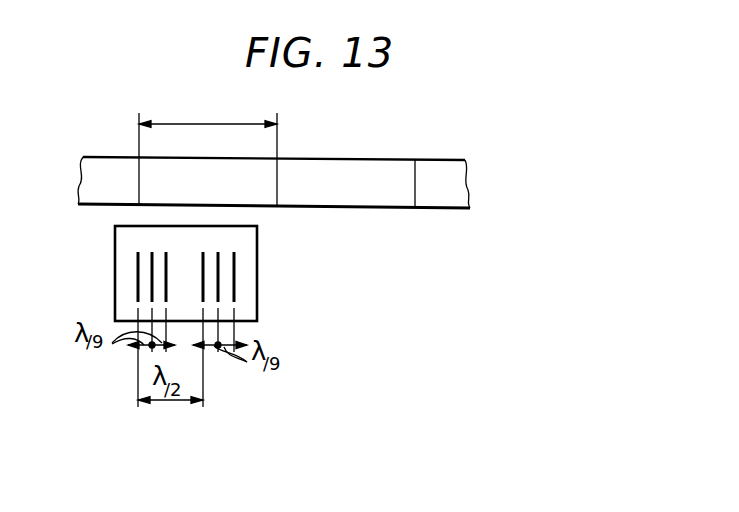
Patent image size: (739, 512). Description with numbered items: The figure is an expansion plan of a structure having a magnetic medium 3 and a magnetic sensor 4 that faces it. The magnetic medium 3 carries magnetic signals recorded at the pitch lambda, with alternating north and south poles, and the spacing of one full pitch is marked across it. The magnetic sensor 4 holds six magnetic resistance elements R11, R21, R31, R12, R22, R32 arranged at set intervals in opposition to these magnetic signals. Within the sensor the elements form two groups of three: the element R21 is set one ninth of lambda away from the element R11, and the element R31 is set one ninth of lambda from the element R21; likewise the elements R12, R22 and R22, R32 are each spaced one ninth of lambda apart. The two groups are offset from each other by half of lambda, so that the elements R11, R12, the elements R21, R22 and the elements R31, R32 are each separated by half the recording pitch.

The magnetic medium 3 is at (445, 208).
The magnetic sensor 4 is at (257, 318).
The magnetic resistance element R11 is at (138, 270).
The magnetic resistance element R21 is at (152, 252).
The magnetic resistance element R31 is at (166, 252).
The magnetic resistance element R12 is at (203, 252).
The magnetic resistance element R22 is at (218, 252).
The magnetic resistance element R32 is at (234, 282).